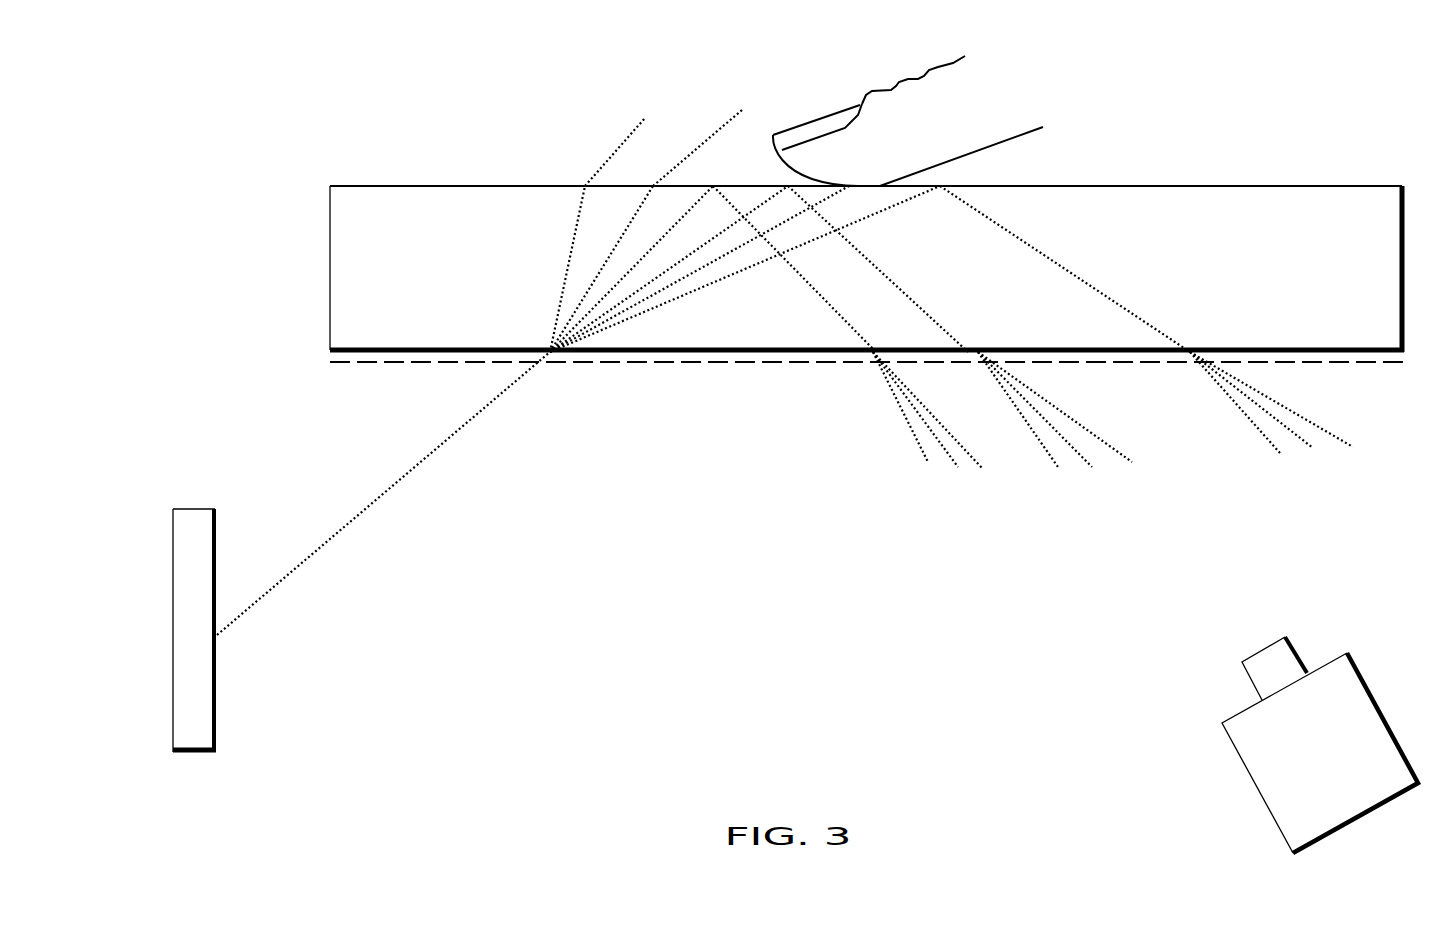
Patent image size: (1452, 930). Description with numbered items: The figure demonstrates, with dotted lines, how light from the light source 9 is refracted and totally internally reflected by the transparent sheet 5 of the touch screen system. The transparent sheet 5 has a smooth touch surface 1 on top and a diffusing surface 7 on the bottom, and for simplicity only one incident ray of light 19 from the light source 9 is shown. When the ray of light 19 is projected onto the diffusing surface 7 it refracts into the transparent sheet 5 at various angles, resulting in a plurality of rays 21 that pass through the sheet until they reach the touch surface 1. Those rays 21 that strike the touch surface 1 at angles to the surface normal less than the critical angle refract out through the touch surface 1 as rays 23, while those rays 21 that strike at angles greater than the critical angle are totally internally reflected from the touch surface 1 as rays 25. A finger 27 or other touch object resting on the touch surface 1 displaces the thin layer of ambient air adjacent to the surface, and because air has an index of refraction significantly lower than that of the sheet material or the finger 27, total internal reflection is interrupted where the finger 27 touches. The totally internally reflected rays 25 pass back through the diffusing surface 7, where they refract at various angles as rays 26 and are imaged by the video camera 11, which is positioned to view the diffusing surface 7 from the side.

The touch surface 1 is at (1402, 184).
The transparent sheet 5 is at (1392, 272).
The diffusing surface 7 is at (1403, 363).
The light source 9 is at (173, 589).
The video camera 11 is at (1385, 717).
The ray of light 19 is at (465, 420).
The rays 21 is at (582, 204).
The rays 23 is at (617, 148).
The rays 25 is at (838, 317).
The rays 26 is at (880, 372).
The finger 27 is at (902, 92).